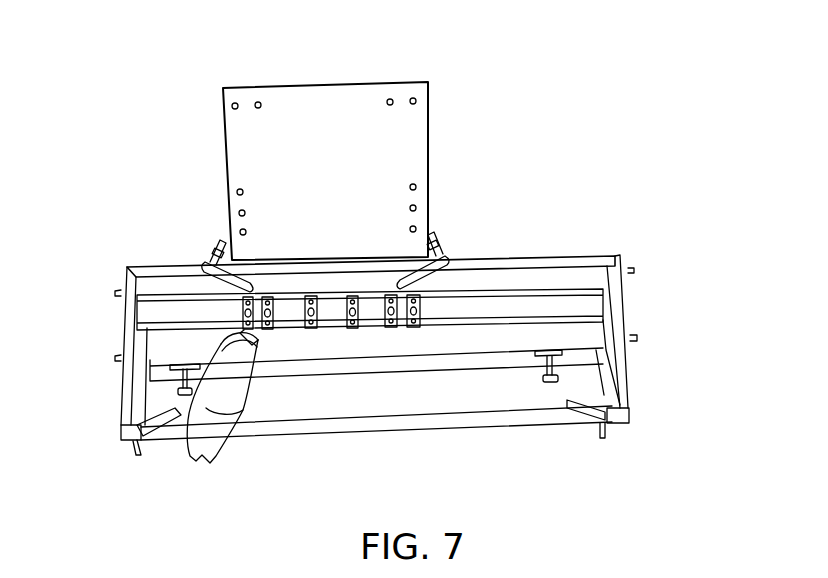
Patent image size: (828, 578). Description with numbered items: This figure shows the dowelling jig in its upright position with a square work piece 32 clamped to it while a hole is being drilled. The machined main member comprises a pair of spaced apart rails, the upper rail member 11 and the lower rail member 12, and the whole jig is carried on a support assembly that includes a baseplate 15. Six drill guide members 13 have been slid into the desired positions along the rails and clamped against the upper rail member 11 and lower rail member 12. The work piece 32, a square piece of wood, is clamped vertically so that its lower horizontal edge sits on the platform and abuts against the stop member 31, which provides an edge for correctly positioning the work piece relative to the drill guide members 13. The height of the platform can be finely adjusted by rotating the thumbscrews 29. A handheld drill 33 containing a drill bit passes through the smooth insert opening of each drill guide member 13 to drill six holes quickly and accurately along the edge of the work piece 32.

The upper rail member 11 is at (167, 263).
The lower rail member 12 is at (373, 343).
The drill guide members 13 is at (447, 308).
The baseplate 15 is at (393, 397).
The thumbscrews 29 is at (550, 375).
The stop member 31 is at (223, 311).
The work piece 32 is at (331, 98).
The handheld drill 33 is at (217, 449).